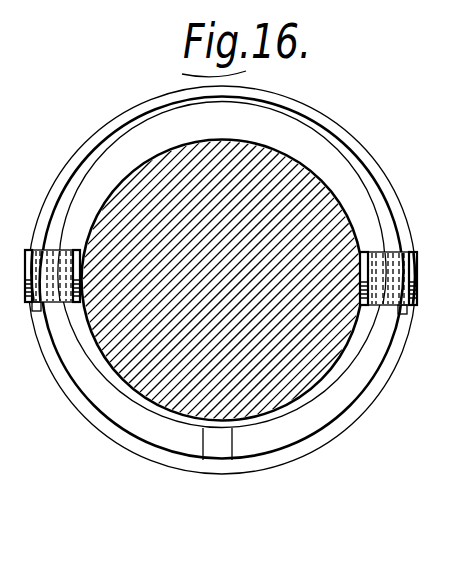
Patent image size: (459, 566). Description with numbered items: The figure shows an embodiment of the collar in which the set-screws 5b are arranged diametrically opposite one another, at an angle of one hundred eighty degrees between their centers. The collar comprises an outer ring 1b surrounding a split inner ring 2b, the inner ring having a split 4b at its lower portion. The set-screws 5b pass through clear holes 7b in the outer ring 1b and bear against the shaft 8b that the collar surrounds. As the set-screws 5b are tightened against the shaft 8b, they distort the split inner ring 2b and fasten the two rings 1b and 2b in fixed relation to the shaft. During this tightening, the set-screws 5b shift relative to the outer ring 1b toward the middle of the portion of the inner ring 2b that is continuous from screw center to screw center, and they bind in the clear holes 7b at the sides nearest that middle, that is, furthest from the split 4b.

The outer ring 1b is at (133, 115).
The split inner ring 2b is at (297, 140).
The split 4b is at (220, 442).
The set-screws 5b is at (378, 252).
The clear holes 7b is at (400, 316).
The shaft 8b is at (163, 393).